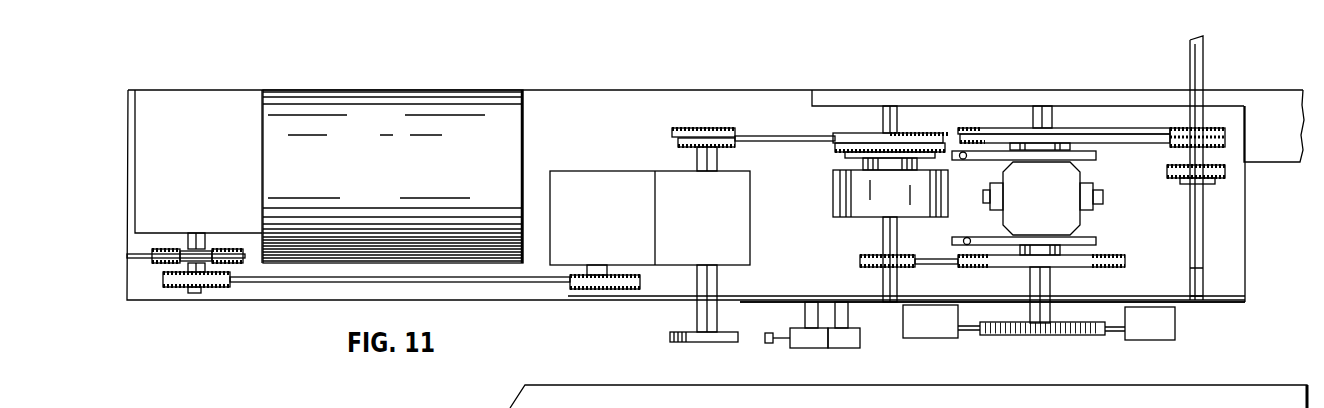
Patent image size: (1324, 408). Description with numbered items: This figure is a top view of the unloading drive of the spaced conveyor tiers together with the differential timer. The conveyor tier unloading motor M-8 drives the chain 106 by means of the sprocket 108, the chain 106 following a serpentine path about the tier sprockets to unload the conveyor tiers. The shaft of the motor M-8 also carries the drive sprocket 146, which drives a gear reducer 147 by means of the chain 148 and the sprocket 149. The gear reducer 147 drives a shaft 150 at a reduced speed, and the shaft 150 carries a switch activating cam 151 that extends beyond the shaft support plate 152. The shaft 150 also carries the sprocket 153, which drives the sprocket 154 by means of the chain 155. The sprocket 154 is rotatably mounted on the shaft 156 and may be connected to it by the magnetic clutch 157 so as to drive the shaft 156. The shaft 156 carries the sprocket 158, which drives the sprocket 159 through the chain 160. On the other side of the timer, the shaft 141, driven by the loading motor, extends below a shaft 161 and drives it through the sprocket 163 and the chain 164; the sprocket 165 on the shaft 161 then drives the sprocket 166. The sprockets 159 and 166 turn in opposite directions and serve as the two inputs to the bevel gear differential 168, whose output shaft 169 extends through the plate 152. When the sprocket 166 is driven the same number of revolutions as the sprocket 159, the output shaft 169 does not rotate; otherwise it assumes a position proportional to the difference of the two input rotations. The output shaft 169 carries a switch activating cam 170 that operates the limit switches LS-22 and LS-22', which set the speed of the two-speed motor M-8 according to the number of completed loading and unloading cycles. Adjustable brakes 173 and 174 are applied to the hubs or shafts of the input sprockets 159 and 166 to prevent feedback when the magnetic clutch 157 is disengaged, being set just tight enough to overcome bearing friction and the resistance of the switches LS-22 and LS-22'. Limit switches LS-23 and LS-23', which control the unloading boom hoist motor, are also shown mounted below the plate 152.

The unloading drive motor M-8 is at (384, 90).
The chain 106 is at (145, 256).
The sprocket 108 is at (232, 248).
The drive sprocket 146 is at (220, 288).
The chain 148 is at (502, 284).
The sprocket 149 is at (600, 246).
The gear reducer 147 is at (601, 171).
The sprocket 153 is at (701, 130).
The chain 155 is at (767, 136).
The shaft 150 is at (695, 315).
The switch activating cam 151 is at (675, 340).
The shaft support plate 152 is at (820, 300).
The sprocket 154 is at (840, 134).
The shaft 156 is at (898, 125).
The magnetic clutch 157 is at (833, 190).
The sprocket 158 is at (866, 258).
The chain 160 is at (917, 264).
The sprocket 159 is at (1006, 267).
The output shaft 169 is at (1050, 282).
The sprocket 166 is at (1012, 128).
The sprocket 165 is at (1176, 143).
The chain 164 is at (1226, 172).
The sprocket 163 is at (1178, 179).
The shaft 141 is at (1188, 59).
The shaft 161 is at (1233, 262).
The adjustable brake 173 is at (1113, 168).
The differential 168 is at (1082, 224).
The adjustable brake 174 is at (1097, 241).
The limit switch LS-23 is at (791, 338).
The limit switch LS-23' is at (845, 338).
The limit switch LS-22 is at (939, 340).
The switch activating cam 170 is at (1055, 336).
The limit switch LS-22' is at (1152, 338).